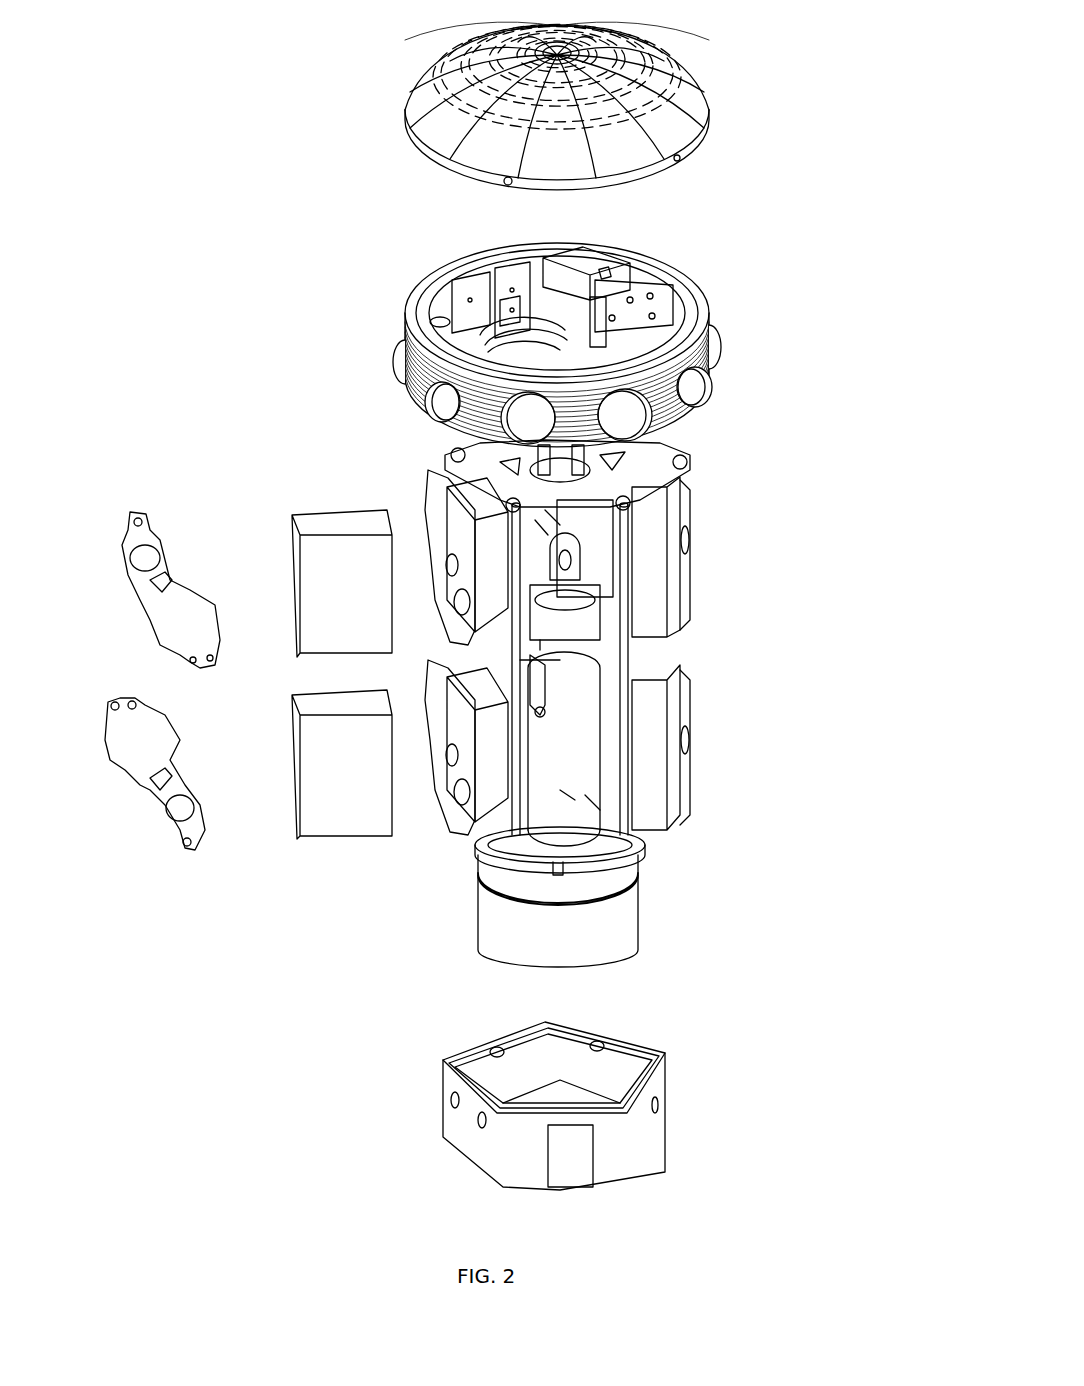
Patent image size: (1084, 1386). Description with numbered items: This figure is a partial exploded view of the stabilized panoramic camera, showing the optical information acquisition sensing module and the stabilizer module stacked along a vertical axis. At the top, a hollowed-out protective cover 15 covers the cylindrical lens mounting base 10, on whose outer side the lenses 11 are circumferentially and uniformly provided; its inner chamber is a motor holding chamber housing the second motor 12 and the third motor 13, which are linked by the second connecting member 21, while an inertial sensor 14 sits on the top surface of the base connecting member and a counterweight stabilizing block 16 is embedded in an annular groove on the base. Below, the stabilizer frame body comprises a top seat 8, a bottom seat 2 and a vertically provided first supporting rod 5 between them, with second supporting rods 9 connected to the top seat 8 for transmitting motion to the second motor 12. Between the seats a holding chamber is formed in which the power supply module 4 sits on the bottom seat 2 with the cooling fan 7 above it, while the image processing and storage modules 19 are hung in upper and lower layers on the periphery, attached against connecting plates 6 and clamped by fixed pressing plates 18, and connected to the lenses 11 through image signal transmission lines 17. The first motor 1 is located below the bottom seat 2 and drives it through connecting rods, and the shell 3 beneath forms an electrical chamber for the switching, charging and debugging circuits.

The first motor 1 is at (652, 925).
The bottom seat 2 is at (547, 850).
The shell 3 is at (641, 1118).
The power supply module 4 is at (545, 785).
The first supporting rod 5 is at (665, 643).
The connecting plate 6 is at (676, 654).
The cooling fan 7 is at (695, 570).
The top seat 8 is at (446, 446).
The second supporting rod 9 is at (708, 428).
The lens mounting base 10 is at (642, 345).
The lens 11 is at (467, 382).
The second motor 12 is at (447, 306).
The third motor 13 is at (406, 247).
The inertial sensor 14 is at (677, 248).
The protective cover 15 is at (642, 104).
The counterweight stabilizing block 16 is at (657, 299).
The image signal transmission line 17 is at (411, 625).
The fixed pressing plate 18 is at (187, 620).
The image processing and storage module 19 is at (347, 822).
The second connecting member 21 is at (386, 264).